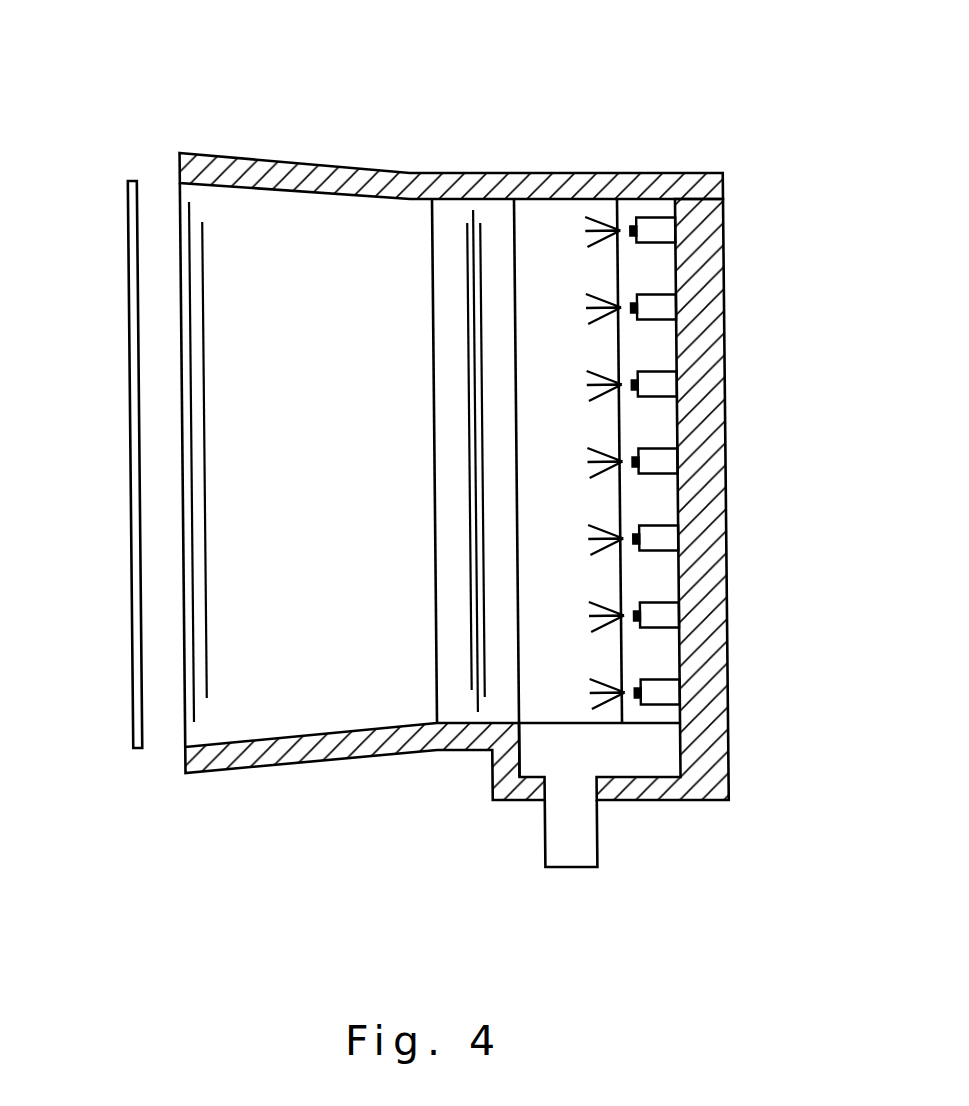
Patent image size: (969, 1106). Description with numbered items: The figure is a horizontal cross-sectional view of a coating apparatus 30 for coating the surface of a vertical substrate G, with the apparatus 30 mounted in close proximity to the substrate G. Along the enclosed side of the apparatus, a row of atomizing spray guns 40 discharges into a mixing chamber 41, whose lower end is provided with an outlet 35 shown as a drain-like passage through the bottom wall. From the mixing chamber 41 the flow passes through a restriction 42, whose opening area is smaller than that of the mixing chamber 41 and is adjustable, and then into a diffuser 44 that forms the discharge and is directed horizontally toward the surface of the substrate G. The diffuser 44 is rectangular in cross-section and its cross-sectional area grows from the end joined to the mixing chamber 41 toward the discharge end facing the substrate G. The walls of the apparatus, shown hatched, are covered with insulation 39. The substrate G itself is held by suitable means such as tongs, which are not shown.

The coating apparatus 30 is at (768, 133).
The outlet 35 is at (597, 835).
The insulation 39 is at (700, 358).
The atomizing spray guns 40 is at (657, 313).
The mixing chamber 41 is at (560, 228).
The restriction 42 is at (453, 232).
The diffuser 44 is at (307, 257).
The substrate G is at (128, 220).